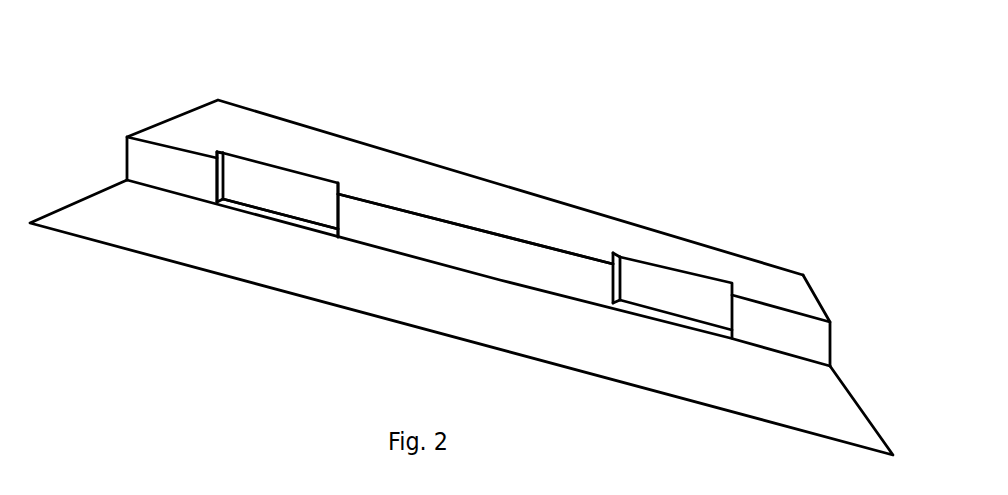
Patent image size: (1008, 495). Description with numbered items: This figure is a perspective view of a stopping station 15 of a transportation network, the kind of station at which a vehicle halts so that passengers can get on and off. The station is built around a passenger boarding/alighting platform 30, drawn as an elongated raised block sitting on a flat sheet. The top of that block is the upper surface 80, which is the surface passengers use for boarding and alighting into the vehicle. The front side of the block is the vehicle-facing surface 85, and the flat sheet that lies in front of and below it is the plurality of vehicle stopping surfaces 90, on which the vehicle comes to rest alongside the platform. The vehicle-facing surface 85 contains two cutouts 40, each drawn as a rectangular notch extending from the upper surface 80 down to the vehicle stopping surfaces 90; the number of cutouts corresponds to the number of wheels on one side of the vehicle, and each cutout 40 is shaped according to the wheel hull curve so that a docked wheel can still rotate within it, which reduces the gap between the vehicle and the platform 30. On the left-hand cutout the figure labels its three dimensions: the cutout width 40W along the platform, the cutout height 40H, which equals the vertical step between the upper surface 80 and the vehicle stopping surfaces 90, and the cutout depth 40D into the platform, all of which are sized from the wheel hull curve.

The stopping station 15 is at (781, 289).
The passenger boarding/alighting platform 30 is at (478, 233).
The upper surface 80 is at (478, 233).
The vehicle-facing surface 85 is at (533, 265).
The vehicle stopping surfaces 90 is at (461, 317).
The cutout 40 is at (474, 245).
The cutout depth 40D is at (212, 155).
The cutout height 40H is at (343, 214).
The cutout width 40W is at (261, 210).